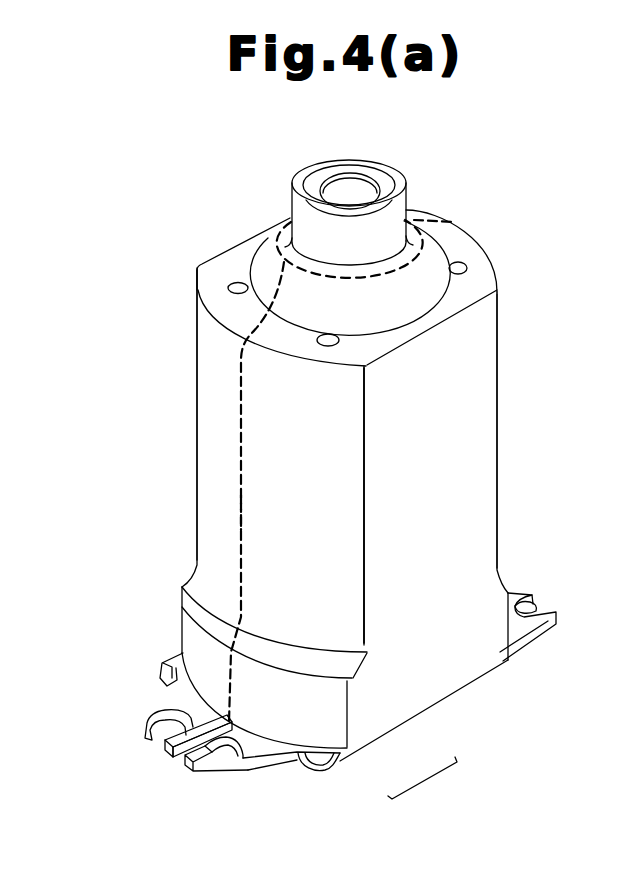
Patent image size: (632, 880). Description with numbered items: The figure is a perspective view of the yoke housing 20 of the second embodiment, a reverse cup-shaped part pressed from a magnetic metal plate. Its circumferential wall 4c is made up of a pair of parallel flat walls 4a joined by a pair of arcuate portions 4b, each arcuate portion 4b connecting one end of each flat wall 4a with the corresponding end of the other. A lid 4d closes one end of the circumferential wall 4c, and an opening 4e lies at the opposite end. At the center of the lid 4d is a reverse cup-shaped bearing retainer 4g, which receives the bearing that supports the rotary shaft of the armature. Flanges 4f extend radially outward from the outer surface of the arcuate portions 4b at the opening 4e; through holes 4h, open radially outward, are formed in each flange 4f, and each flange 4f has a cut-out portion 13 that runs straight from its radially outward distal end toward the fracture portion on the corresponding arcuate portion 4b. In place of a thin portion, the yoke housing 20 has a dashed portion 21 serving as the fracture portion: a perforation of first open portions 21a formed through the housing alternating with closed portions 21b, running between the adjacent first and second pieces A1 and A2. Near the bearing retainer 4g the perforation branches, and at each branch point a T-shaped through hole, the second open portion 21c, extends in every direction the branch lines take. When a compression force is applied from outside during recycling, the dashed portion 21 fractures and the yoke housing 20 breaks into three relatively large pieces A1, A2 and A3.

The yoke housing 20 is at (552, 160).
The dashed portion 21 is at (454, 224).
The first open portions 21a is at (240, 503).
The closed portions 21b is at (240, 515).
The second open portions 21c is at (297, 276).
The flat walls 4a is at (395, 714).
The arcuate portions 4b is at (318, 733).
The circumferential wall 4c is at (421, 783).
The lid 4d is at (232, 258).
The opening 4e is at (455, 700).
The flanges 4f is at (165, 702).
The bearing retainer 4g is at (407, 186).
The through holes 4h is at (144, 740).
The cut-out portion 13 is at (184, 760).
The first piece A1 is at (476, 400).
The second piece A2 is at (192, 405).
The third piece A3 is at (294, 172).